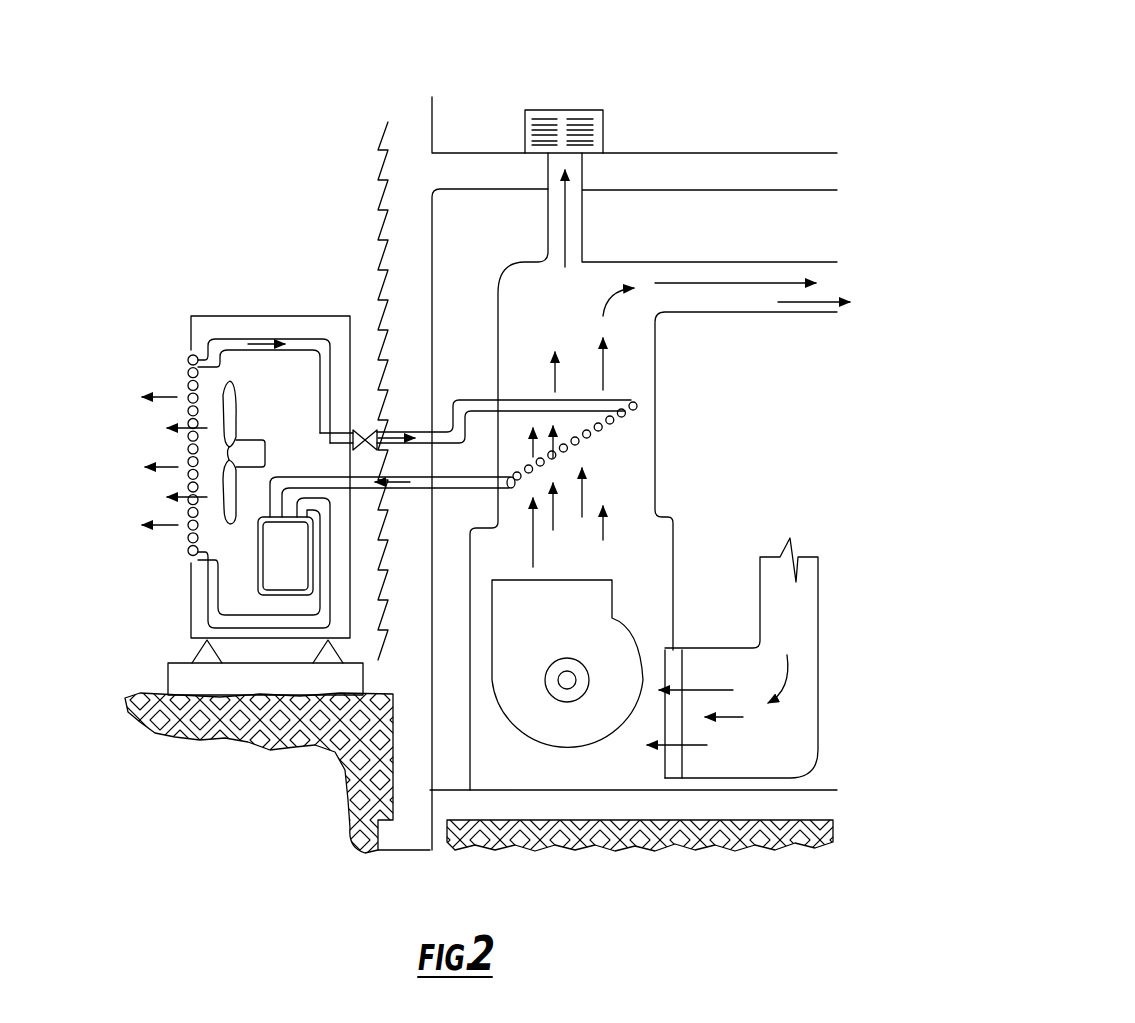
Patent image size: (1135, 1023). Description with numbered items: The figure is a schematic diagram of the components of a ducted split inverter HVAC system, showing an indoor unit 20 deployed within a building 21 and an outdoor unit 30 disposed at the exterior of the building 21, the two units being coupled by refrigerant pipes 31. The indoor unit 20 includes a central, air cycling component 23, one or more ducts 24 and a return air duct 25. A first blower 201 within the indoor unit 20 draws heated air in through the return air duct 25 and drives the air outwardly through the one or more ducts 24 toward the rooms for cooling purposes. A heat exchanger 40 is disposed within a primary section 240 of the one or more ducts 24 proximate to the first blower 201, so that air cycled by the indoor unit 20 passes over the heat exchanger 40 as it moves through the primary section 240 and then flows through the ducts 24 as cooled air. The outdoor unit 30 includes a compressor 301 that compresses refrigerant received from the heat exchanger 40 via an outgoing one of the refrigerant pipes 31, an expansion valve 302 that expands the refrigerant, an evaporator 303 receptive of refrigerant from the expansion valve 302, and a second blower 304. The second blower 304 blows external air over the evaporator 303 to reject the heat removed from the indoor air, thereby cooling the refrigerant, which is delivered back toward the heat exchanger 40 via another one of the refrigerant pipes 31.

The indoor unit 20 is at (677, 515).
The first blower 201 is at (568, 735).
The building 21 is at (403, 145).
The central, air cycling component 23 is at (522, 738).
The ducts 24 is at (802, 293).
The primary section 240 is at (639, 484).
The return air duct 25 is at (818, 598).
The outdoor unit 30 is at (192, 312).
The compressor 301 is at (277, 575).
The expansion valve 302 is at (371, 428).
The evaporator 303 is at (188, 532).
The second blower 304 is at (224, 400).
The refrigerant pipes 31 is at (421, 480).
The heat exchanger 40 is at (644, 400).